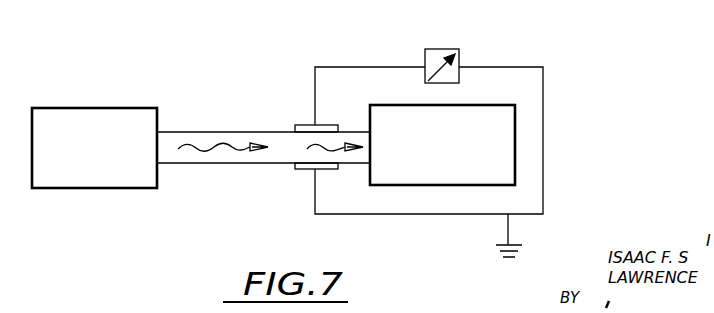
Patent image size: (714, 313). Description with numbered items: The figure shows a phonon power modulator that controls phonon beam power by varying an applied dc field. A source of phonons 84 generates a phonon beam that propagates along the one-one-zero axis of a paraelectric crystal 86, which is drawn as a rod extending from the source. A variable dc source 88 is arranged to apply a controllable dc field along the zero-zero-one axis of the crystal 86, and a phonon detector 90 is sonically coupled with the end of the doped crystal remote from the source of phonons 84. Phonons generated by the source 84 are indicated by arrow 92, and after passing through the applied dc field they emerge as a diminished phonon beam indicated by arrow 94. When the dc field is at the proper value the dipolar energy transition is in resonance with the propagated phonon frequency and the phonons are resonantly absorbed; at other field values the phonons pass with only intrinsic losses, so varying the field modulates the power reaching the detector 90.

The source of phonons 84 is at (78, 108).
The paraelectric crystal 86 is at (173, 132).
The variable dc source 88 is at (460, 53).
The phonon detector 90 is at (515, 123).
The arrow indicating generated phonons 92 is at (220, 147).
The arrow indicating diminished phonon beam 94 is at (312, 146).